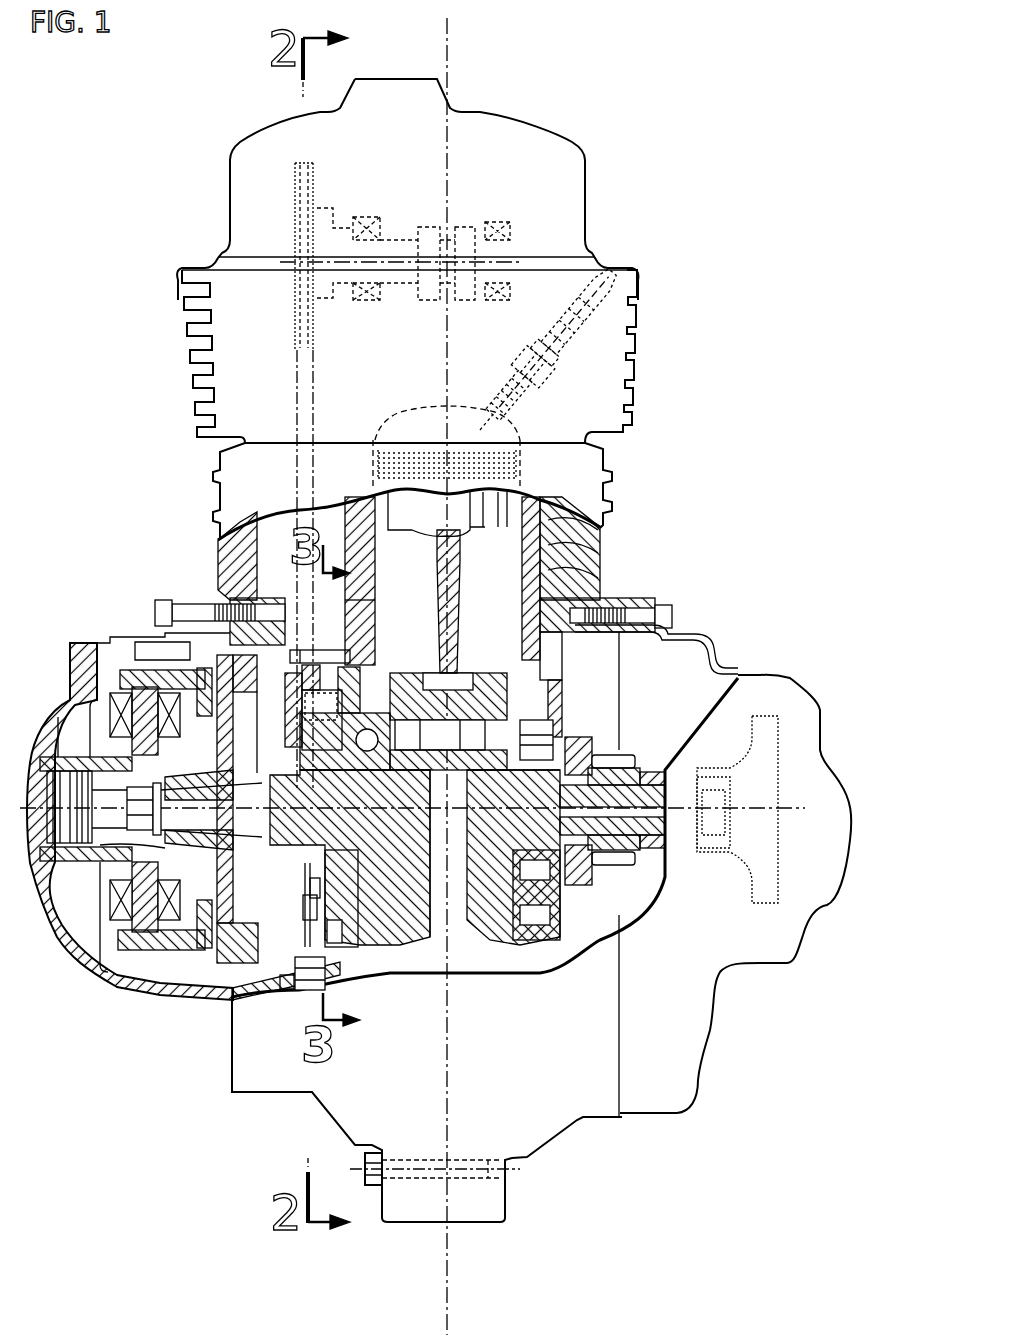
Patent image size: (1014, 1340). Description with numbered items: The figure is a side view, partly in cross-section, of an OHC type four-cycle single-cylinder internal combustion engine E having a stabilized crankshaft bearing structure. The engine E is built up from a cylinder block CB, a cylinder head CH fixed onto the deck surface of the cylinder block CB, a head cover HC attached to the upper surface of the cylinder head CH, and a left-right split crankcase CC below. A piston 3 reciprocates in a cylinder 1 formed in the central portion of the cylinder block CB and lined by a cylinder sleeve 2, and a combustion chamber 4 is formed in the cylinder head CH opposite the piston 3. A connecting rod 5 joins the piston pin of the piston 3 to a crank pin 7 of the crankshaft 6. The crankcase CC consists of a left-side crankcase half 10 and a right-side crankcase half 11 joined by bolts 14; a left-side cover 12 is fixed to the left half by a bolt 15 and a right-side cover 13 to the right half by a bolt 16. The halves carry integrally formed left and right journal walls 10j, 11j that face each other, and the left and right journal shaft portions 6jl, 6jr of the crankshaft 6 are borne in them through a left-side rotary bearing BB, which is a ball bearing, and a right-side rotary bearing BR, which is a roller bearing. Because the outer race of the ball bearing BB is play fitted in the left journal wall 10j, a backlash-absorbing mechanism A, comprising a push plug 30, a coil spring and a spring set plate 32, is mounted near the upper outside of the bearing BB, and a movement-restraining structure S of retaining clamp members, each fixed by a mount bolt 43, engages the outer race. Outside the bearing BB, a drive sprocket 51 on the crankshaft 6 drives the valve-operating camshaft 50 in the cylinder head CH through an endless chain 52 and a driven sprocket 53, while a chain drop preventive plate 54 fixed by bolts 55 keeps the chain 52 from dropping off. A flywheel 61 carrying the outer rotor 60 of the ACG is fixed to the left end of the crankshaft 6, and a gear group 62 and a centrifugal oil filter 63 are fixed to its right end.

The cylinder 1 is at (588, 540).
The cylinder sleeve 2 is at (540, 658).
The piston 3 is at (446, 488).
The combustion chamber 4 is at (416, 430).
The connecting rod 5 is at (461, 598).
The crankshaft 6 is at (456, 871).
The left journal shaft portion 6jl is at (465, 938).
The right journal shaft portion 6jr is at (533, 930).
The crank pin 7 is at (555, 710).
The left-side crankcase half 10 is at (414, 1091).
The left journal wall 10j is at (352, 603).
The right-side crankcase half 11 is at (553, 1091).
The right journal wall 11j is at (606, 740).
The left-side cover 12 is at (156, 988).
The right-side cover 13 is at (735, 894).
The bolt 14 is at (373, 1187).
The bolt 15 is at (152, 606).
The bolt 16 is at (672, 618).
The push plug 30 is at (353, 668).
The spring set plate 32 is at (360, 905).
The mount bolt 43 is at (294, 973).
The valve-operating camshaft 50 is at (405, 240).
The drive sprocket 51 is at (305, 856).
The endless chain 52 is at (292, 386).
The driven sprocket 53 is at (290, 185).
The chain drop preventive plate 54 is at (308, 897).
The bolt 55 is at (290, 988).
The outer rotor 60 is at (140, 952).
The flywheel 61 is at (141, 858).
The gear group 62 is at (622, 718).
The centrifugal oil filter 63 is at (722, 862).
The backlash-absorbing mechanism A is at (272, 685).
The movement-restraining structure S is at (310, 887).
The left-side rotary bearing BB is at (372, 806).
The right-side rotary bearing BR is at (573, 973).
The crankcase CC is at (478, 884).
The cylinder block CB is at (459, 552).
The cylinder head CH is at (431, 525).
The head cover HC is at (414, 214).
The internal combustion engine E is at (645, 225).